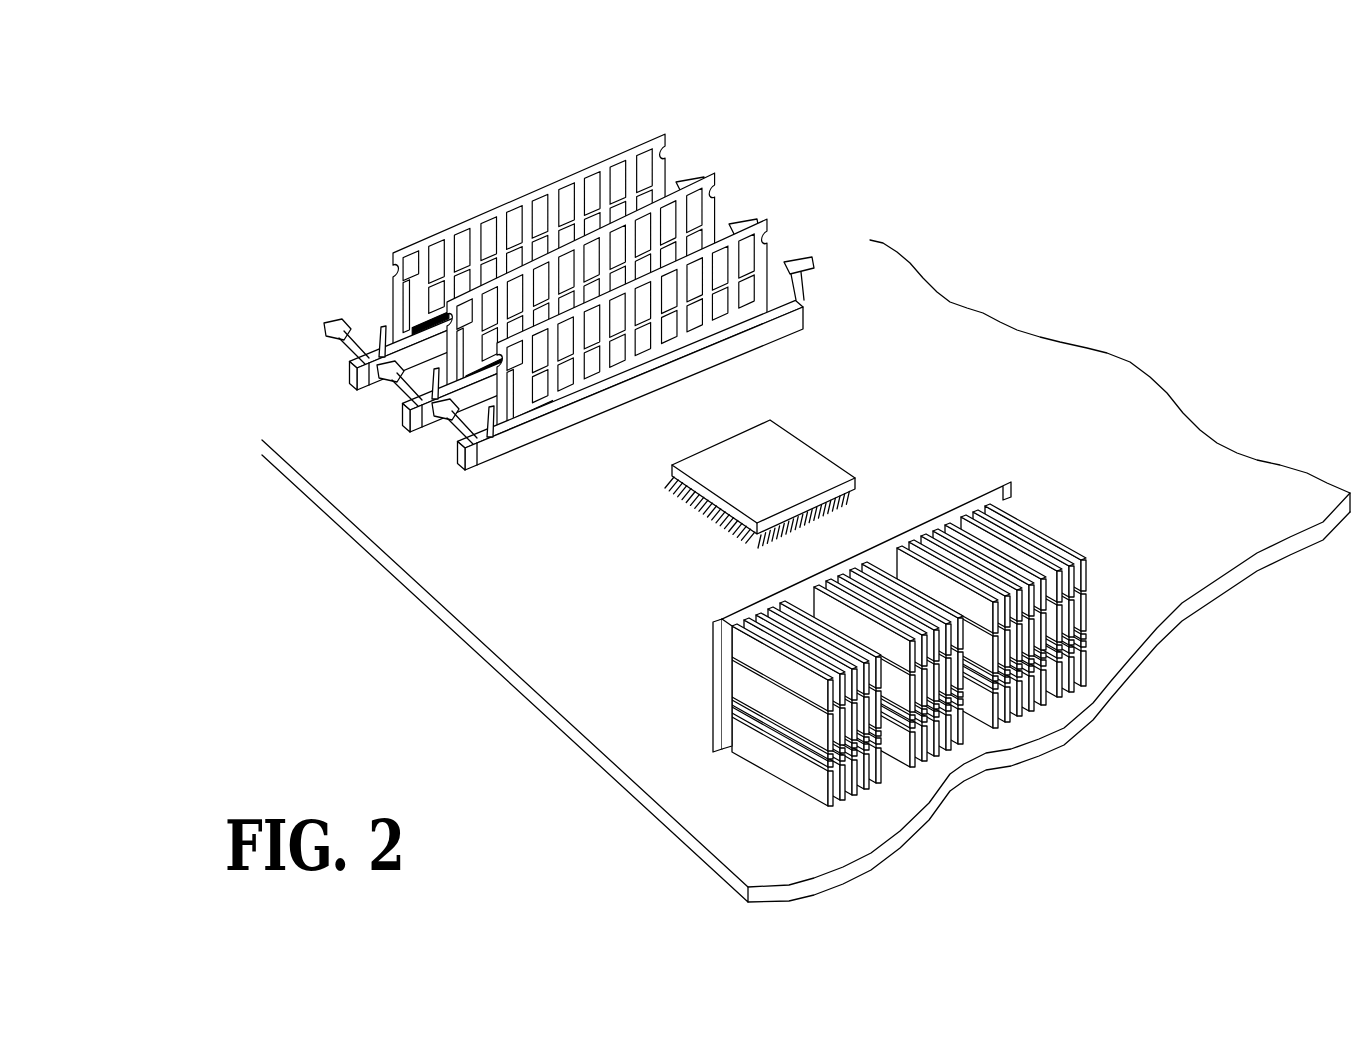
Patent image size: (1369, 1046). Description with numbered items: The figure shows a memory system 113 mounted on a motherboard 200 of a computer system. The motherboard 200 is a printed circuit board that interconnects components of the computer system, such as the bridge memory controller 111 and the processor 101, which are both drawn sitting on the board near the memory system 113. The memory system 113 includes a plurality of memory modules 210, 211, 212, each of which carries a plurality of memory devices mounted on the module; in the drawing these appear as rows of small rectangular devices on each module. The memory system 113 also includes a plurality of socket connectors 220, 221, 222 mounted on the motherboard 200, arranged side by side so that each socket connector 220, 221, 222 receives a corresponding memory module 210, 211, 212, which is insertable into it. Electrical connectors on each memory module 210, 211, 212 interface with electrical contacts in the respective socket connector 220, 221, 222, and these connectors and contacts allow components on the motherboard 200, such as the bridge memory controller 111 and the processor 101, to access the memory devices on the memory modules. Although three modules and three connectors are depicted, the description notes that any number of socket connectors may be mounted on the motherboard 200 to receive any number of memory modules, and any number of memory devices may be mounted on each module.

The memory system 113 is at (637, 318).
The memory module 212 is at (640, 153).
The memory module 211 is at (710, 183).
The memory module 210 is at (762, 225).
The socket connector 222 is at (357, 372).
The socket connector 221 is at (413, 410).
The socket connector 220 is at (468, 456).
The bridge memory controller 111 is at (802, 458).
The processor 101 is at (993, 487).
The motherboard 200 is at (1200, 580).